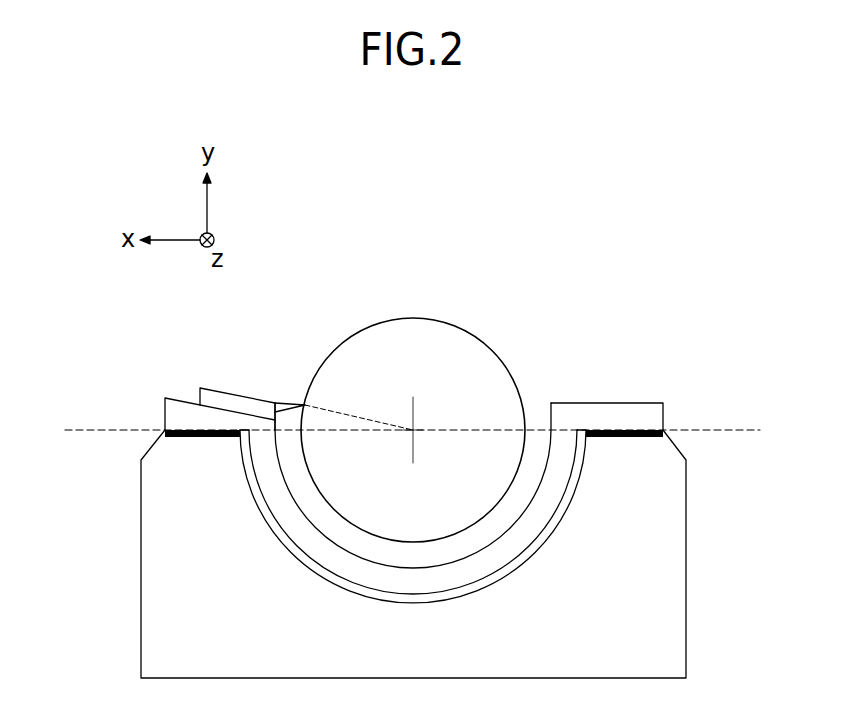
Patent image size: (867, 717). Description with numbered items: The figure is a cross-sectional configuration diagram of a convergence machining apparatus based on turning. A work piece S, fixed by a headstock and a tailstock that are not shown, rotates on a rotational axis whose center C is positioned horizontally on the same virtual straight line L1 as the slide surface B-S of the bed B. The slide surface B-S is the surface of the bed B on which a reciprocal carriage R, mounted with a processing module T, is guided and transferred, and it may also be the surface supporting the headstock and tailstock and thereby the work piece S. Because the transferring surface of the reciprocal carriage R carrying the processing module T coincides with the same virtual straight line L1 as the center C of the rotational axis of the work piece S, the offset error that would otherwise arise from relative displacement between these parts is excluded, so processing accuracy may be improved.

The work piece S is at (492, 345).
The center of rotational axis C is at (412, 428).
The reciprocal carriage R is at (180, 410).
The processing module T is at (285, 402).
The bed B is at (155, 608).
The slide surface B-S is at (205, 435).
The virtual straight line L1 is at (430, 430).